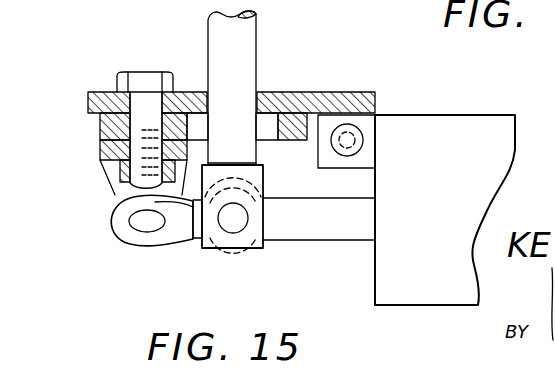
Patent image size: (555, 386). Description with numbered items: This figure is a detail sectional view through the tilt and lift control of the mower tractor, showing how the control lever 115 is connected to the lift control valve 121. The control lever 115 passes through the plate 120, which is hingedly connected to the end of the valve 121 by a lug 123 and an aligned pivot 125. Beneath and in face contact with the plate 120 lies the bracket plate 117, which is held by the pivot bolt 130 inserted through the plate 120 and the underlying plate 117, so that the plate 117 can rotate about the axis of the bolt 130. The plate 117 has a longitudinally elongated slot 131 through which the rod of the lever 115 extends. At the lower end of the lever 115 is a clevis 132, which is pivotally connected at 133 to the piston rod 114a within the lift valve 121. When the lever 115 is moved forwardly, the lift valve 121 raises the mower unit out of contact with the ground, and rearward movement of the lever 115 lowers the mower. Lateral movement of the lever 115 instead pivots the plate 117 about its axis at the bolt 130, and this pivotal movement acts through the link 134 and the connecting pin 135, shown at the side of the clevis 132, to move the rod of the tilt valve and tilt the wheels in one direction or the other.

The piston rod 114a is at (297, 228).
The control lever 115 is at (222, 30).
The bracket plate 117 is at (110, 127).
The plate 120 is at (297, 92).
The lift control valve 121 is at (440, 115).
The lug 123 is at (365, 128).
The pivot 125 is at (350, 152).
The pivot bolt 130 is at (147, 78).
The longitudinally elongated slot 131 is at (267, 127).
The clevis 132 is at (255, 228).
The pivotal connection 133 is at (230, 222).
The link 134 is at (173, 228).
The connecting pin 135 is at (143, 223).